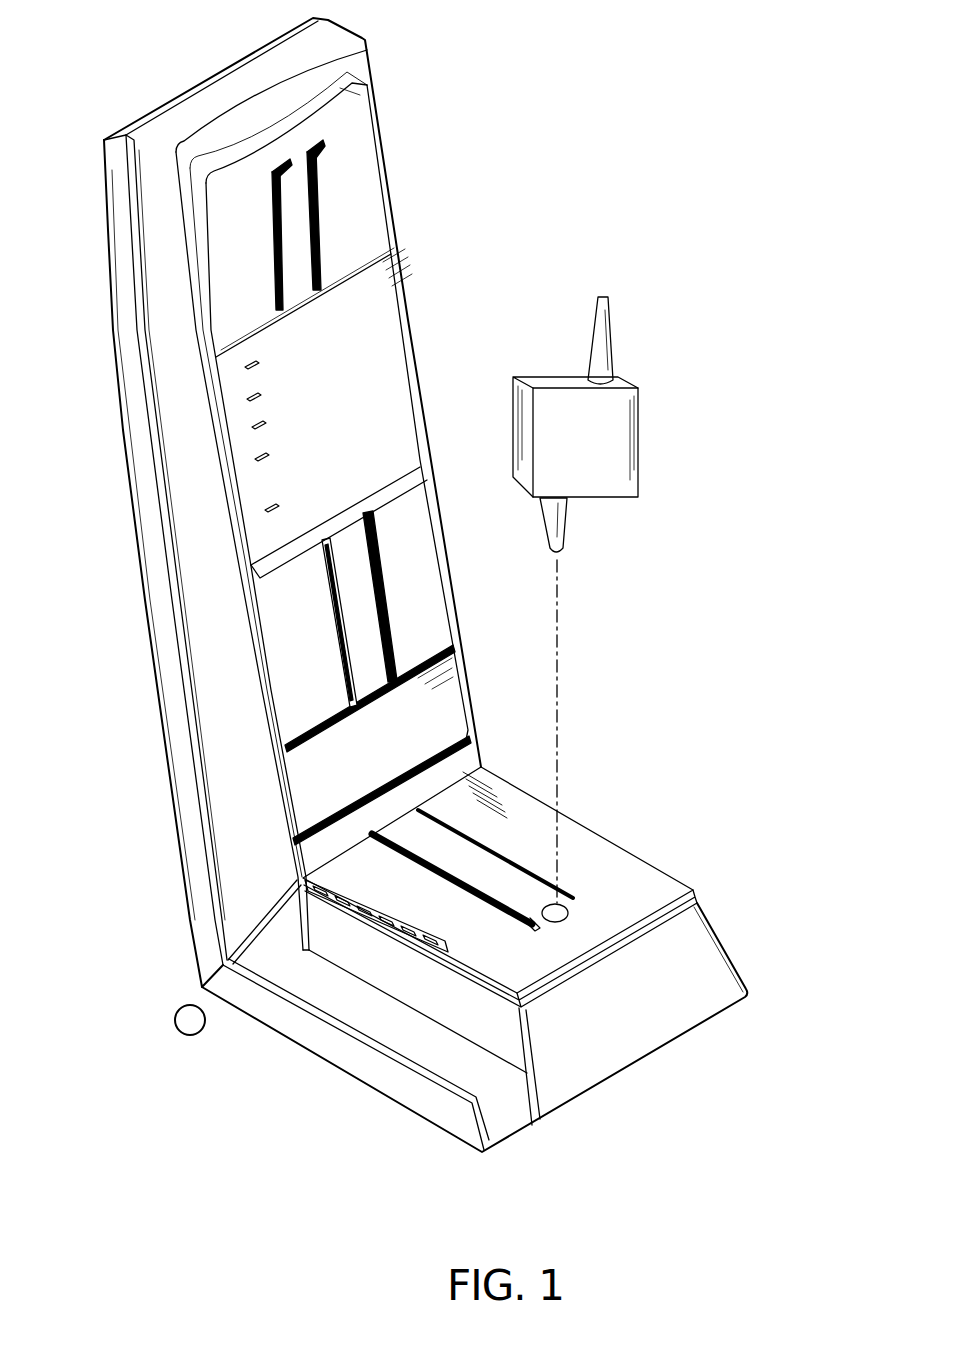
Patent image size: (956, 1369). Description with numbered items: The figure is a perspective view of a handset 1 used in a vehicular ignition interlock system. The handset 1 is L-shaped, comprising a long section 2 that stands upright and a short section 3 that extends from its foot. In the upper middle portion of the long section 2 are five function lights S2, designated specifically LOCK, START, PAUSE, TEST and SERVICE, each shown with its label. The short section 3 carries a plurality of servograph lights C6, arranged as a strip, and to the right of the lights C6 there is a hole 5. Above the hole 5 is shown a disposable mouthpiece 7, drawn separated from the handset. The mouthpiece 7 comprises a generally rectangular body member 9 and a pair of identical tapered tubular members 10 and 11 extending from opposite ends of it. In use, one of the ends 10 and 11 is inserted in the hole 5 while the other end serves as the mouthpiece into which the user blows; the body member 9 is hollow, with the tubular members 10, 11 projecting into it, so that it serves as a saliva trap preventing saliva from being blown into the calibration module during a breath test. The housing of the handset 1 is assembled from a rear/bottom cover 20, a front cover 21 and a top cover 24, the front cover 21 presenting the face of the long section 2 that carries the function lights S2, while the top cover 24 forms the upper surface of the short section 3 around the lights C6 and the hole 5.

The handset 1 is at (436, 216).
The long section 2 is at (196, 584).
The short section 3 is at (616, 814).
The hole 5 is at (566, 903).
The disposable mouthpiece 7 is at (650, 427).
The body member 9 is at (639, 478).
The tapered tubular member 10 is at (568, 527).
The tapered tubular member 11 is at (604, 330).
The rear/bottom cover 20 is at (145, 754).
The front cover 21 is at (238, 854).
The top cover 24 is at (617, 1048).
The function lights S2 is at (227, 482).
The servograph lights C6 is at (404, 904).